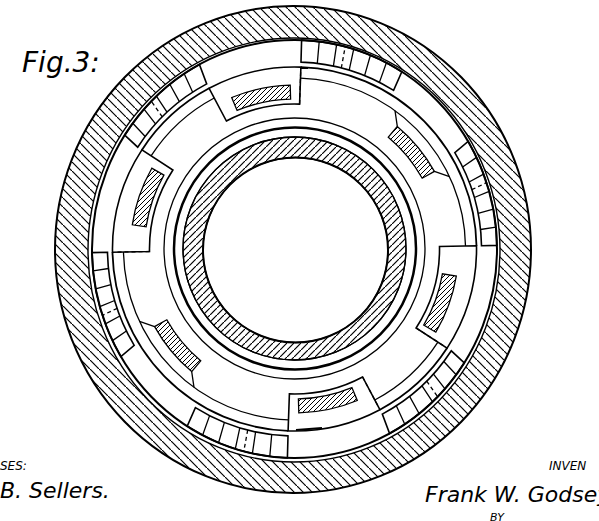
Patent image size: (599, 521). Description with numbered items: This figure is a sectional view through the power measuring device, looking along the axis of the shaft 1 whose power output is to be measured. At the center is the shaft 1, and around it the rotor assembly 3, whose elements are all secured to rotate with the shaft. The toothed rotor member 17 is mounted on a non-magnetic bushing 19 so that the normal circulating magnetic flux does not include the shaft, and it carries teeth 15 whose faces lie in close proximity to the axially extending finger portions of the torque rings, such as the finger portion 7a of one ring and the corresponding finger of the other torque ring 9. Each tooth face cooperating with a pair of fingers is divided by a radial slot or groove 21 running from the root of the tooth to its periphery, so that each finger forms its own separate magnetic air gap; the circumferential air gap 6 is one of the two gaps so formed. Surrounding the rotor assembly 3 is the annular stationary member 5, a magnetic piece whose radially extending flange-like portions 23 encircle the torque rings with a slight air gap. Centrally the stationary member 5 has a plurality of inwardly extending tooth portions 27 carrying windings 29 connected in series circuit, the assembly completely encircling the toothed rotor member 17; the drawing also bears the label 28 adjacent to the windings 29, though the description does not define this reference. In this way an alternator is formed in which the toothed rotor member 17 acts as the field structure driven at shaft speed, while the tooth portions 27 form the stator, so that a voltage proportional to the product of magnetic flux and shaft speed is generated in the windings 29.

The shaft 1 is at (260, 342).
The rotor assembly 3 is at (128, 176).
The annular stationary member 5 is at (509, 104).
The circumferential air gap 6 is at (462, 150).
The axially extending finger portion 7a is at (397, 124).
The torque ring 9 is at (416, 128).
The teeth 15 is at (148, 257).
The toothed rotor member 17 is at (362, 210).
The non-magnetic bushing 19 is at (360, 140).
The radial slot or groove 21 is at (306, 86).
The radially extending flange-like portions 23 is at (74, 337).
The inwardly extending tooth portions 27 is at (470, 216).
The coil lead 28 is at (305, 70).
The windings 29 is at (394, 80).